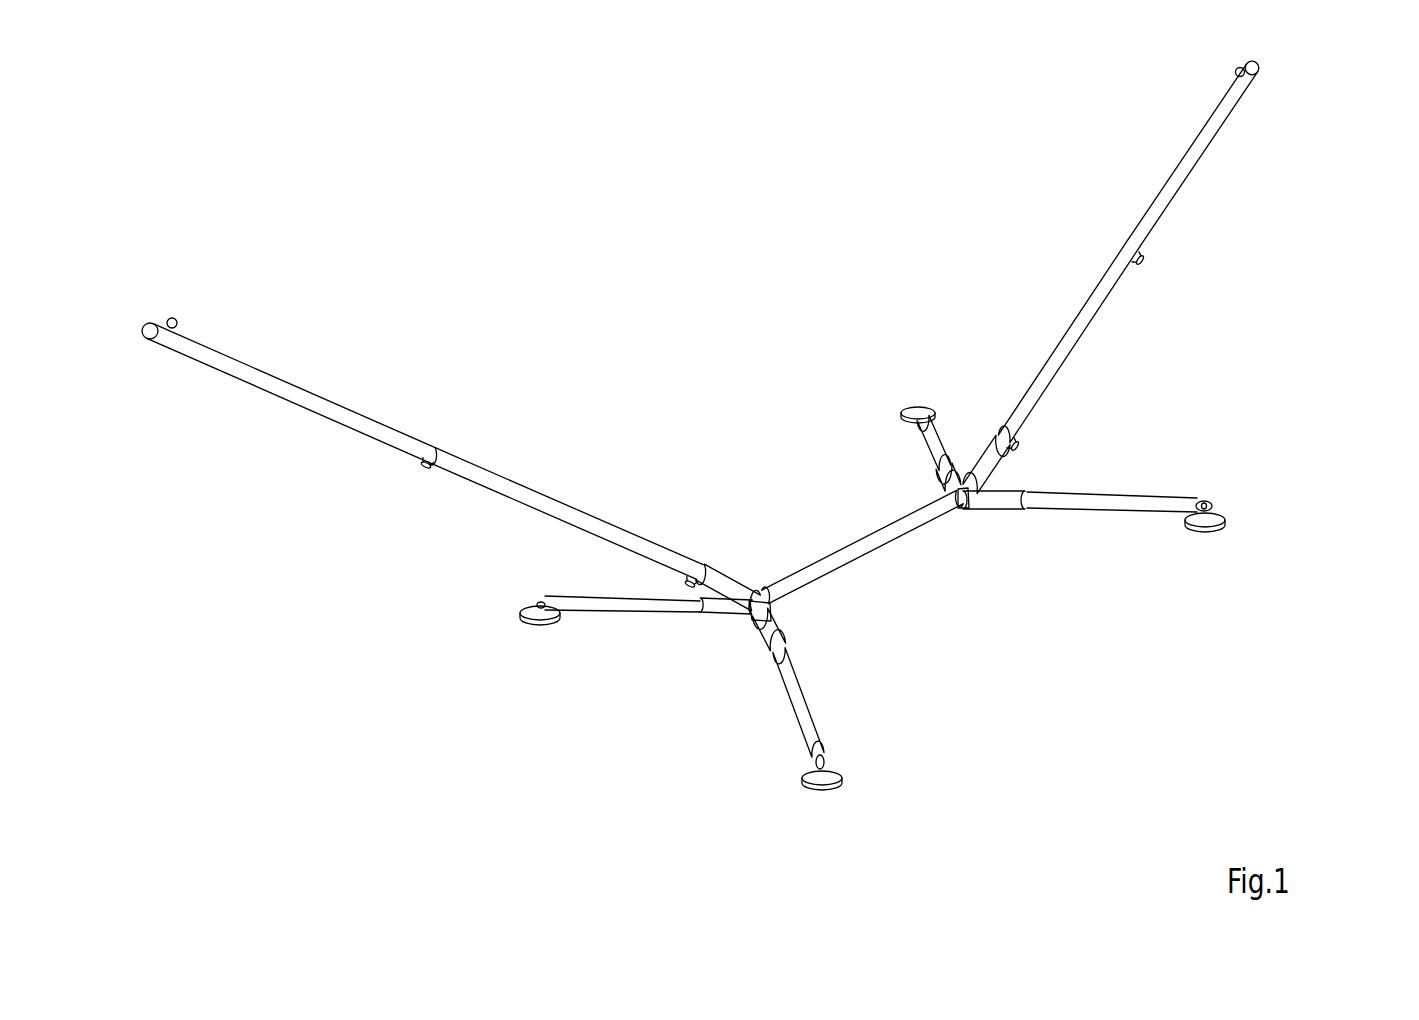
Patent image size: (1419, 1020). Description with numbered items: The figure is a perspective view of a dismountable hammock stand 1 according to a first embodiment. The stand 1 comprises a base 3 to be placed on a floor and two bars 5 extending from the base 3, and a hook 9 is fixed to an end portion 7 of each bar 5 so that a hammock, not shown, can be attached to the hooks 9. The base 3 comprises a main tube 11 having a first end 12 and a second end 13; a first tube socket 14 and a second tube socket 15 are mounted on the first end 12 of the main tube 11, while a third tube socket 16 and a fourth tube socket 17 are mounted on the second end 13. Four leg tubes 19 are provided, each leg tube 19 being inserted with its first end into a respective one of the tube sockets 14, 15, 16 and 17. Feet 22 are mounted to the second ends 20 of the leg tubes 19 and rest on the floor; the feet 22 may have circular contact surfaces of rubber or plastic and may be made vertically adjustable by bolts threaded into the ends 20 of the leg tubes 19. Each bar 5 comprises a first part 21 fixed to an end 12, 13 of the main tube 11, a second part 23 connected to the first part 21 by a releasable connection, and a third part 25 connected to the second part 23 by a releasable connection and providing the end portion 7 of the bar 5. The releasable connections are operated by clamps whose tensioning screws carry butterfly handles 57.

The stand 1 is at (1338, 177).
The base 3 is at (1141, 440).
The bar 5 is at (503, 438).
The end portion 7 is at (182, 355).
The hook 9 is at (182, 317).
The main tube 11 is at (867, 555).
The first end 12 is at (959, 506).
The second end 13 is at (773, 608).
The first tube socket 14 is at (968, 487).
The second tube socket 15 is at (953, 480).
The third tube socket 16 is at (713, 612).
The fourth tube socket 17 is at (785, 630).
The leg tube 19 is at (640, 612).
The second end 20 is at (1200, 498).
The first part 21 is at (720, 572).
The foot 22 is at (535, 614).
The second part 23 is at (563, 503).
The third part 25 is at (300, 385).
The butterfly handle 57 is at (415, 470).